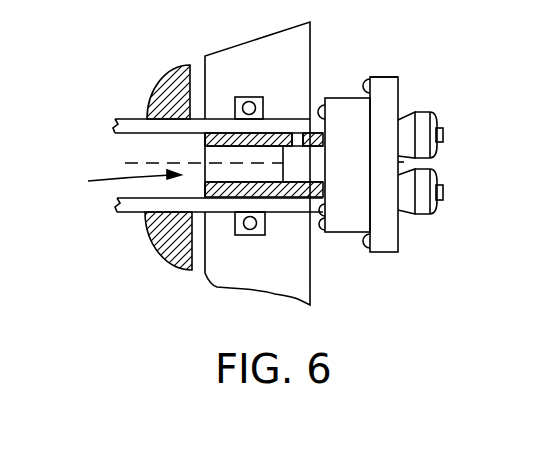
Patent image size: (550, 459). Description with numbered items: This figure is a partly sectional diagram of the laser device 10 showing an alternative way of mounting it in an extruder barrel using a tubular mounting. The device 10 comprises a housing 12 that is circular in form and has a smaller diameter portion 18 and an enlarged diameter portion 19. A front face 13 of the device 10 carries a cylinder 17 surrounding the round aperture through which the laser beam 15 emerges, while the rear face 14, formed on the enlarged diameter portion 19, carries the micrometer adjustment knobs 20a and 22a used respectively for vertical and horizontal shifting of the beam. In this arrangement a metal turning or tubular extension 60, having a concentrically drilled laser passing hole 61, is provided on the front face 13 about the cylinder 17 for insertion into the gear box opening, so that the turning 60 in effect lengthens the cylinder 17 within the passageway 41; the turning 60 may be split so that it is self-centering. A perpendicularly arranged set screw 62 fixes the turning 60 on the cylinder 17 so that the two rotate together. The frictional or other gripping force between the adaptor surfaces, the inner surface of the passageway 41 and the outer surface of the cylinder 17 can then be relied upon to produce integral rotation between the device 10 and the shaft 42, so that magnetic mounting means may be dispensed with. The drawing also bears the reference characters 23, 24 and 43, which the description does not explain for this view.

The laser device 10 is at (468, 92).
The housing member 12 is at (400, 291).
The front face 13 is at (320, 100).
The rear face 14 is at (408, 163).
The laser beam 15 is at (148, 163).
The cylinder 17 is at (300, 168).
The smaller diameter portion 18 is at (356, 168).
The enlarged diameter portion 19 is at (396, 77).
The adjustment knob 20a is at (432, 130).
The adjustment knob 22a is at (429, 208).
The plate upper edge 23 is at (386, 75).
The seal 24 is at (322, 226).
The passageway 41 is at (127, 198).
The shaft 42 is at (133, 119).
The upper housing portion 43 is at (284, 83).
The tubular extension 60 is at (204, 137).
The laser passing hole 61 is at (108, 182).
The set screw 62 is at (296, 142).